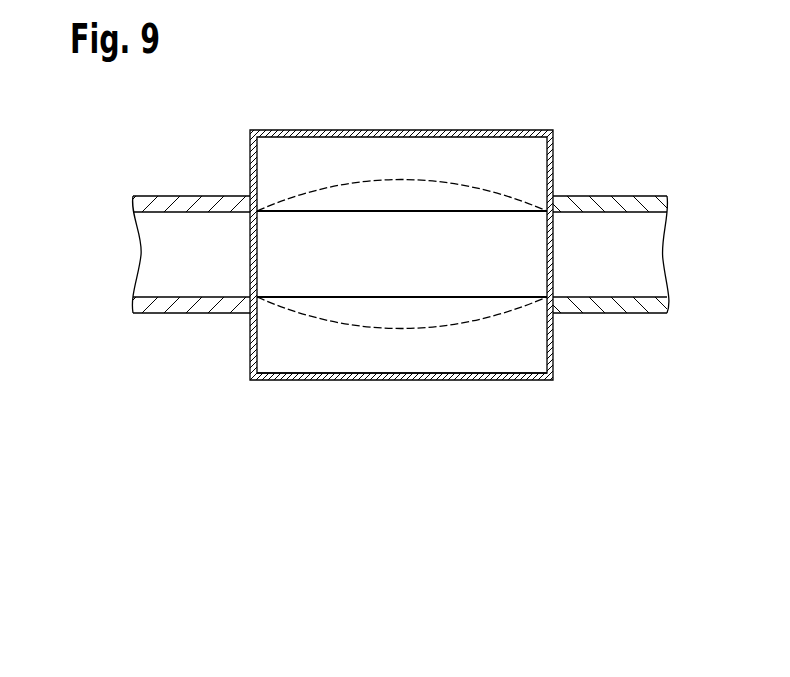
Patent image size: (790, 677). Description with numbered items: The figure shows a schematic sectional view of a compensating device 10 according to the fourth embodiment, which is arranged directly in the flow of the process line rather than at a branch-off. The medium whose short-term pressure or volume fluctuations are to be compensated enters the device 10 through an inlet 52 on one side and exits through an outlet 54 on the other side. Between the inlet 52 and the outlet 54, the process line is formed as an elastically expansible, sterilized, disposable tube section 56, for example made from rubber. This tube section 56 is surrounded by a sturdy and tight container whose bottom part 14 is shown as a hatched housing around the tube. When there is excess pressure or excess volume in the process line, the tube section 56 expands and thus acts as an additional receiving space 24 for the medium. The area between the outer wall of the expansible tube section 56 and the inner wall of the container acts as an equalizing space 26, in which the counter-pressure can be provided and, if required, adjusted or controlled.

The device 10 is at (568, 125).
The bottom part 14 is at (462, 130).
The receiving space 24 is at (437, 275).
The equalizing space 26 is at (340, 357).
The inlet 52 is at (250, 234).
The outlet 54 is at (548, 233).
The tube section 56 is at (351, 211).